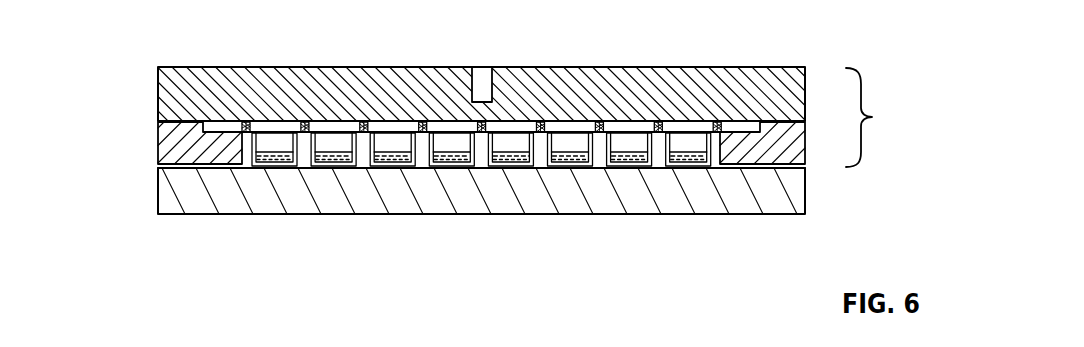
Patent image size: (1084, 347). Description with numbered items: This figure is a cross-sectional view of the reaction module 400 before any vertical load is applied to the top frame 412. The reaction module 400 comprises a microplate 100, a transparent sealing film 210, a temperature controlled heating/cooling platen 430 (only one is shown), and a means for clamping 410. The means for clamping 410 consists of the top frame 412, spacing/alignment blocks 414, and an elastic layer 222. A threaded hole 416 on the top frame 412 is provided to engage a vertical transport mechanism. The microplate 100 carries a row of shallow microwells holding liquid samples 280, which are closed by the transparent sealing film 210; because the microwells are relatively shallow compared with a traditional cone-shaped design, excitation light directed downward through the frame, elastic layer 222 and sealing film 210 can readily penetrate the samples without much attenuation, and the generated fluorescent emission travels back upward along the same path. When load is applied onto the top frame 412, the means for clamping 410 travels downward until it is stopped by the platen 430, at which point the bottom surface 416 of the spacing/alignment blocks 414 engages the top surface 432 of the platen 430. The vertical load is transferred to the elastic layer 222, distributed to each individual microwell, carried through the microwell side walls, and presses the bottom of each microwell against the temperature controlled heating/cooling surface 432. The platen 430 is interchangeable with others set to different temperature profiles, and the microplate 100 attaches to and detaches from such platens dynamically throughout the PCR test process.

The microplate 100 is at (271, 166).
The transparent sealing film 210 is at (393, 135).
The elastic layer 222 is at (590, 127).
The liquid samples 280 is at (633, 168).
The reaction module 400 is at (249, 245).
The means for clamping 410 is at (878, 120).
The top frame 412 is at (156, 92).
The spacing/alignment blocks 414 is at (156, 137).
The threaded hole 416 is at (478, 67).
The temperature controlled heating/cooling platen 430 is at (690, 214).
The top surface of temperature controlled heating/cooling platen 432 is at (782, 175).